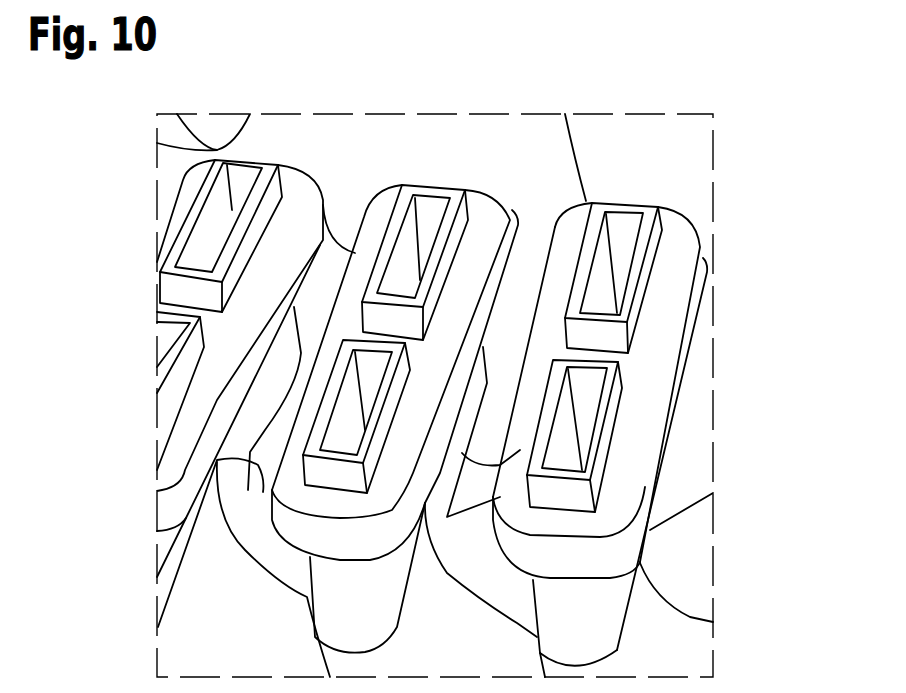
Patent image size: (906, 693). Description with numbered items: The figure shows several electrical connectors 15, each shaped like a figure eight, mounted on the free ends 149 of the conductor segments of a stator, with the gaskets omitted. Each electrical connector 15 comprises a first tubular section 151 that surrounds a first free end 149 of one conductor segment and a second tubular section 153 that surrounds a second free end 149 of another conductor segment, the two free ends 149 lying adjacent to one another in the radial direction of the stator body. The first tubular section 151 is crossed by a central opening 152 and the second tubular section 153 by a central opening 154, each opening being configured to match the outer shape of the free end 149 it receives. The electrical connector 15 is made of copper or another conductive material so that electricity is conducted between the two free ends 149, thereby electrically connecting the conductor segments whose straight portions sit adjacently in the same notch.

The electrical connector 15 is at (645, 420).
The free end 149 is at (630, 200).
The first tubular section 151 is at (690, 254).
The central opening 152 is at (645, 313).
The second tubular section 153 is at (634, 511).
The central opening 154 is at (613, 434).